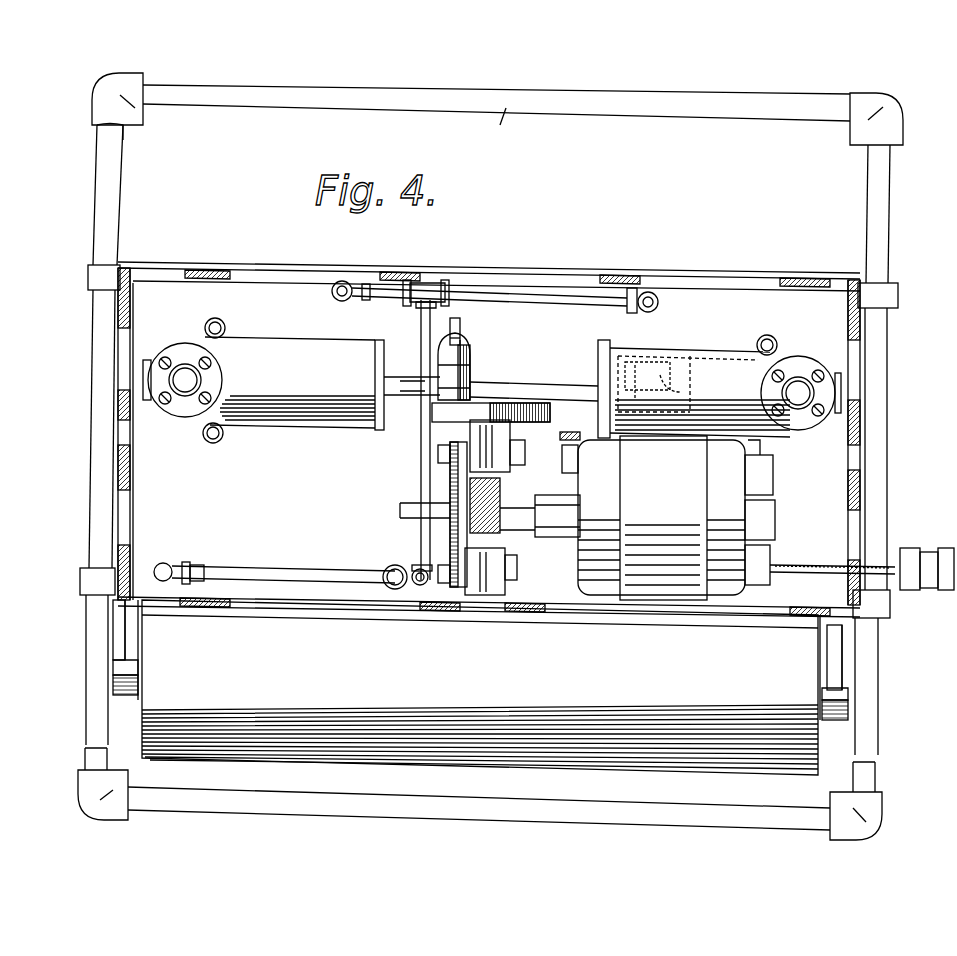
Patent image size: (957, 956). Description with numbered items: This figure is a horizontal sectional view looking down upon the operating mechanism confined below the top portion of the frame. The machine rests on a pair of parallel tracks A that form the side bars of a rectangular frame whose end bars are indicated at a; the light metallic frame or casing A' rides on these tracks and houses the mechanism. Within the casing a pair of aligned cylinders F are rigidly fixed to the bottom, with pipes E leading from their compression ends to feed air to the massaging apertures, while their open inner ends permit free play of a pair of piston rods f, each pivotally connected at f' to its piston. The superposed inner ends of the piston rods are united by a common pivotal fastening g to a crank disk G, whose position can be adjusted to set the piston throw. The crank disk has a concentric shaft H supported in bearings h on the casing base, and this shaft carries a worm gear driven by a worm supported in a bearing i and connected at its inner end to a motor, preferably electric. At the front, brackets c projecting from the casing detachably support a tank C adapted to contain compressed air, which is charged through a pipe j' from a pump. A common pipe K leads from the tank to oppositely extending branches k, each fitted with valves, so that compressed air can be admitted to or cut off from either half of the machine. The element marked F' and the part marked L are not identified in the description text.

The end bar a is at (500, 808).
The track A is at (489, 456).
The metallic frame A' is at (488, 431).
The tank C is at (480, 687).
The bracket c is at (113, 628).
The pipe E is at (180, 365).
The cylinder F is at (263, 380).
The motor cylinder F' is at (694, 386).
The piston rod f is at (491, 371).
The pivotal connection f' is at (677, 378).
The pivotal fastening g is at (470, 365).
The crank disk G is at (512, 403).
The shaft H is at (500, 482).
The bearing h is at (512, 458).
The bearing i is at (438, 503).
The common pipe K is at (421, 466).
The branch k is at (338, 300).
The coupling L is at (510, 532).
The pipe j' is at (293, 562).